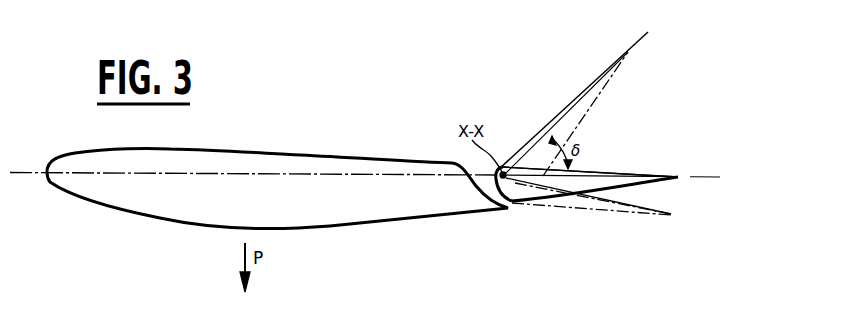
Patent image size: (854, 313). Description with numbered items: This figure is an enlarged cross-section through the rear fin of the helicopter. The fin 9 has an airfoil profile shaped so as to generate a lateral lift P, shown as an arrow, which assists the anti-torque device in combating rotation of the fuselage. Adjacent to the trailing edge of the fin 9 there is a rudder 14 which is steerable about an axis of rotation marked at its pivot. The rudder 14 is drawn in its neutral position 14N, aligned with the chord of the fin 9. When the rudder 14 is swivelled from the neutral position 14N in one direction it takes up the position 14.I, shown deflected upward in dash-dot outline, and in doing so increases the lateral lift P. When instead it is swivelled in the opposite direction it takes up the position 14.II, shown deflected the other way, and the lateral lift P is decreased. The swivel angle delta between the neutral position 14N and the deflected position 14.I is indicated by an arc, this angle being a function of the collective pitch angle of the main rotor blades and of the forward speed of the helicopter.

The fin 9 is at (272, 173).
The rudder 14 is at (645, 181).
The neutral position of the rudder 14N is at (613, 169).
The swivelled position of the rudder increasing lateral lift 14.I is at (568, 120).
The swivelled position of the rudder decreasing lateral lift 14.II is at (588, 210).